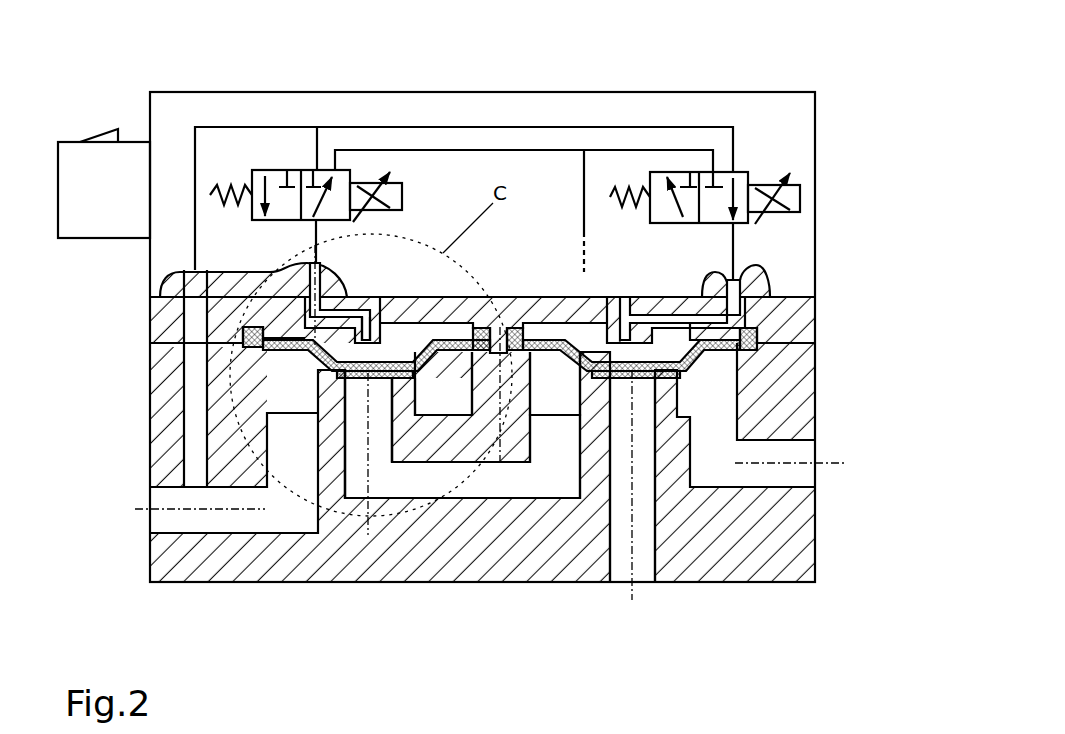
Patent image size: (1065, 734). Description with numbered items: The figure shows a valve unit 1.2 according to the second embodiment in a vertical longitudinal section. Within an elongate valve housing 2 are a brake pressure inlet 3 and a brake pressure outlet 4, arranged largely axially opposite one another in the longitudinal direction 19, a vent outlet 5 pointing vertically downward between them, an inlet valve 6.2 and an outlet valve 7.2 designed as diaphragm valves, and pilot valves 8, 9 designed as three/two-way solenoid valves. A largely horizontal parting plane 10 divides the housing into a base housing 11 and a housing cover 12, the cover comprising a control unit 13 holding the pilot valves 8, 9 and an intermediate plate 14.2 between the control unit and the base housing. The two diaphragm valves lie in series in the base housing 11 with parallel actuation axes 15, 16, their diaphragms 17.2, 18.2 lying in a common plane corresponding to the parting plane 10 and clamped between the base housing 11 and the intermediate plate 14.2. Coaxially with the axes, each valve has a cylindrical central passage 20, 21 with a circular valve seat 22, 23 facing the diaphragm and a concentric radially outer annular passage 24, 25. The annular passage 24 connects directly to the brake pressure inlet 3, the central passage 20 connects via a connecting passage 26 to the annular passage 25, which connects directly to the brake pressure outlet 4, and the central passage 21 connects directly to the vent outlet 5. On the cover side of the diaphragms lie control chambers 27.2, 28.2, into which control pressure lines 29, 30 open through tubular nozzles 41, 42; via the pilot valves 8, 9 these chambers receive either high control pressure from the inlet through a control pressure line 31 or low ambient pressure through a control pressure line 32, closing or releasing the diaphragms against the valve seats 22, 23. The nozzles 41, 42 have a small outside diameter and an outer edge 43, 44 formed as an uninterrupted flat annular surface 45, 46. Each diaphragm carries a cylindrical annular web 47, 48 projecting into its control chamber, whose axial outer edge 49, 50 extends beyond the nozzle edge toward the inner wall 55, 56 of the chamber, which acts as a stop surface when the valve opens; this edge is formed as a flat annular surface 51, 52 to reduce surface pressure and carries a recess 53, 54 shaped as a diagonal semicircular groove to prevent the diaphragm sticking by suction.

The valve unit 1.2 is at (108, 85).
The valve housing 2 is at (482, 474).
The base housing 11 is at (748, 535).
The brake pressure inlet 3 is at (195, 522).
The brake pressure outlet 4 is at (770, 475).
The vent outlet 5 is at (636, 405).
The inlet valve 6.2 is at (370, 345).
The outlet valve 7.2 is at (632, 268).
The pilot valve 8 is at (298, 157).
The pilot valve 9 is at (697, 157).
The parting plane 10 is at (135, 343).
The housing cover 12 is at (425, 126).
The control unit 13 is at (772, 140).
The intermediate plate 14.2 is at (783, 322).
The actuation axis 15 is at (368, 467).
The actuation axis 16 is at (652, 410).
The diaphragm 17.2 is at (406, 372).
The diaphragm 18.2 is at (590, 395).
The longitudinal direction 19 is at (448, 605).
The central passage 20 is at (355, 413).
The central passage 21 is at (630, 440).
The valve seat 22 is at (333, 381).
The valve seat 23 is at (665, 381).
The annular passage 24 is at (443, 383).
The annular passage 25 is at (555, 383).
The connecting passage 26 is at (462, 435).
The control chamber 27.2 is at (412, 340).
The control chamber 28.2 is at (577, 330).
The control pressure line 29 is at (315, 236).
The control pressure line 30 is at (737, 257).
The control pressure line 31 is at (235, 127).
The control pressure line 32 is at (383, 150).
The tubular nozzle 41 is at (403, 264).
The tubular nozzle 42 is at (615, 330).
The outer edge 43 is at (256, 395).
The flat annular surface 45 is at (325, 378).
The outer edge 44 is at (724, 386).
The flat annular surface 46 is at (683, 372).
The annular web 47 is at (312, 362).
The annular web 48 is at (705, 360).
The axial outer edge 49 is at (201, 295).
The flat annular surface 51 is at (201, 295).
The recess 53 is at (330, 285).
The axial outer edge 50 is at (774, 280).
The flat annular surface 52 is at (774, 280).
The recess 54 is at (662, 325).
The inner wall 55 is at (247, 342).
The inner wall 56 is at (745, 342).